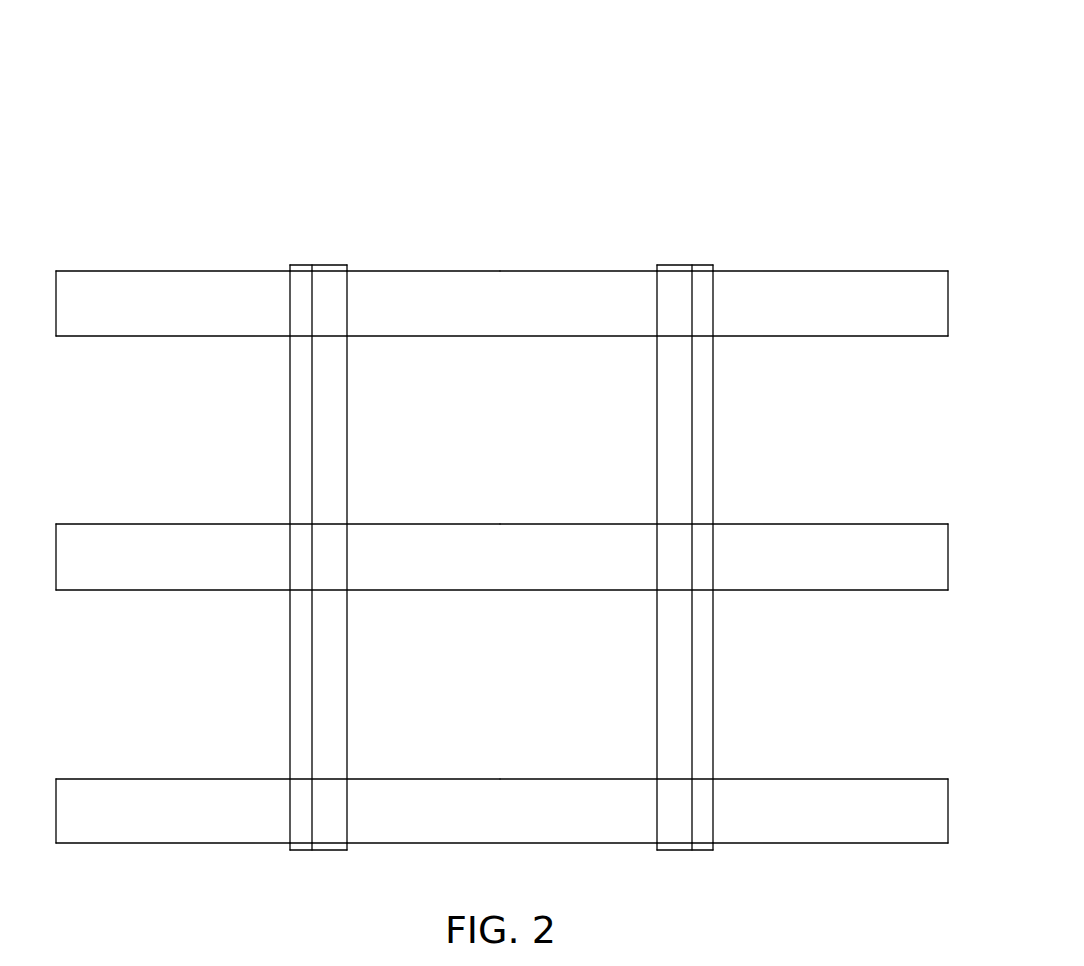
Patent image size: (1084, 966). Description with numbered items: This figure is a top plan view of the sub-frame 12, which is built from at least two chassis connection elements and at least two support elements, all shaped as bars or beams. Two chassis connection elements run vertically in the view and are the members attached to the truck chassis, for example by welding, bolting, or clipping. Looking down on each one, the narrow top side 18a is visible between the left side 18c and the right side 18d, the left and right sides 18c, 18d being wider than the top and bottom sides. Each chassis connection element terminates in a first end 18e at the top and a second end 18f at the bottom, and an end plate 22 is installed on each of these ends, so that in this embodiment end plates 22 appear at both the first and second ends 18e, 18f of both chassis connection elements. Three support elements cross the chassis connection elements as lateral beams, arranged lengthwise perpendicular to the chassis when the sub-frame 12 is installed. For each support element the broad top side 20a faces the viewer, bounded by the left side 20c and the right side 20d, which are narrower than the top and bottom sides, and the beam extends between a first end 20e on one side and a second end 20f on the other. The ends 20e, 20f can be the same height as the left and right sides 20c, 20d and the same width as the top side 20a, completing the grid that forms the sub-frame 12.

The sub-frame 12 is at (232, 59).
The top side of chassis connection element 18a is at (348, 440).
The left side of chassis connection element 18c is at (290, 686).
The right side of chassis connection element 18d is at (347, 686).
The first end of chassis connection element 18e is at (328, 270).
The second end of chassis connection element 18f is at (328, 843).
The top side of support element 20a is at (190, 278).
The left side of support element 20c is at (815, 271).
The right side of support element 20d is at (857, 338).
The first end of support element 20e is at (56, 287).
The second end of support element 20f is at (950, 287).
The end plate 22 is at (320, 264).